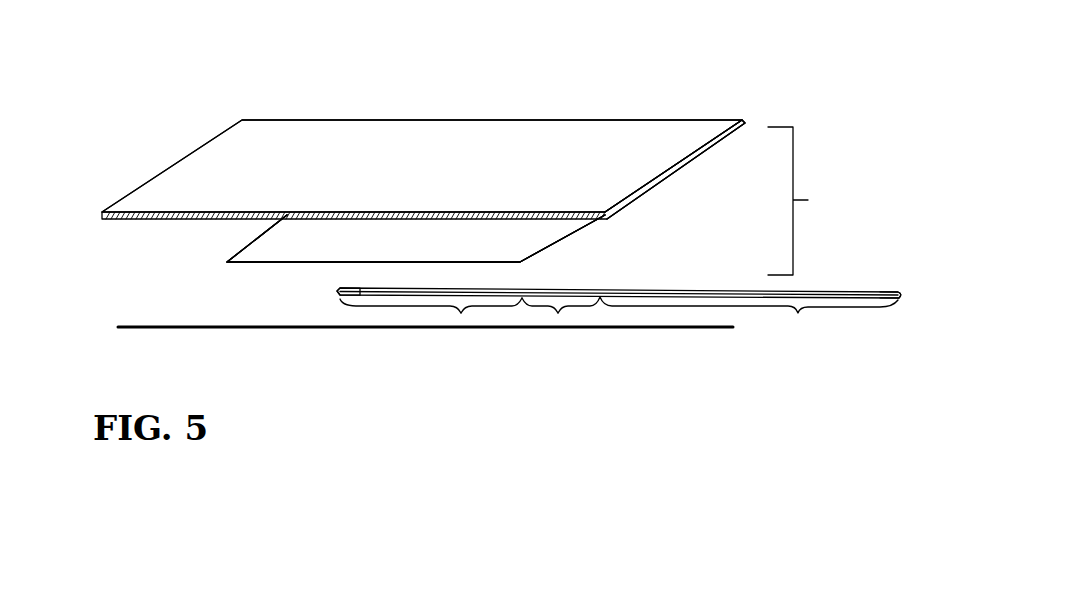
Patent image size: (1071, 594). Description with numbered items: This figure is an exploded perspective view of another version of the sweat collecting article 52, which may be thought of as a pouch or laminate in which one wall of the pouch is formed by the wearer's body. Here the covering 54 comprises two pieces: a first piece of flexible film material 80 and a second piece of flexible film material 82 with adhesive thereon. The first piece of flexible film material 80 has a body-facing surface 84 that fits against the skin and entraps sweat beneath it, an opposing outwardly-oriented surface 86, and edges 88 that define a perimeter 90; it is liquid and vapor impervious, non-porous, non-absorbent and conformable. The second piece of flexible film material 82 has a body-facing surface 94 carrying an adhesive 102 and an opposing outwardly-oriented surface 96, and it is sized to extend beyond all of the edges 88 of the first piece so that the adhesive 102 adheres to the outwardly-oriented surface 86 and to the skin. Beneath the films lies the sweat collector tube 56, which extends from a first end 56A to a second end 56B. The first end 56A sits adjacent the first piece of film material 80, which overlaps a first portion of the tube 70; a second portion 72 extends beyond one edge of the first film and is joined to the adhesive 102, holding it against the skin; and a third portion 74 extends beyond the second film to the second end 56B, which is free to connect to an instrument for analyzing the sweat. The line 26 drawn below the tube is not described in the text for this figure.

The sweat collecting article 52 is at (594, 78).
The covering 54 is at (810, 201).
The sweat collector tube 56 is at (598, 288).
The first end 56A is at (338, 305).
The second end 56B is at (900, 308).
The mounting surface 26 is at (718, 330).
The first portion of the tube 70 is at (462, 313).
The second portion of the tube 72 is at (558, 313).
The third portion of the tube 74 is at (798, 313).
The first piece of flexible film material 80 is at (527, 236).
The second piece of flexible film material 82 is at (271, 142).
The body-facing surface 84 is at (308, 240).
The outwardly-oriented surface 86 is at (272, 243).
The edges 88 is at (228, 255).
The perimeter 90 is at (403, 262).
The body-facing surface 94 is at (657, 150).
The outwardly-oriented surface 96 is at (415, 150).
The adhesive 102 is at (617, 187).